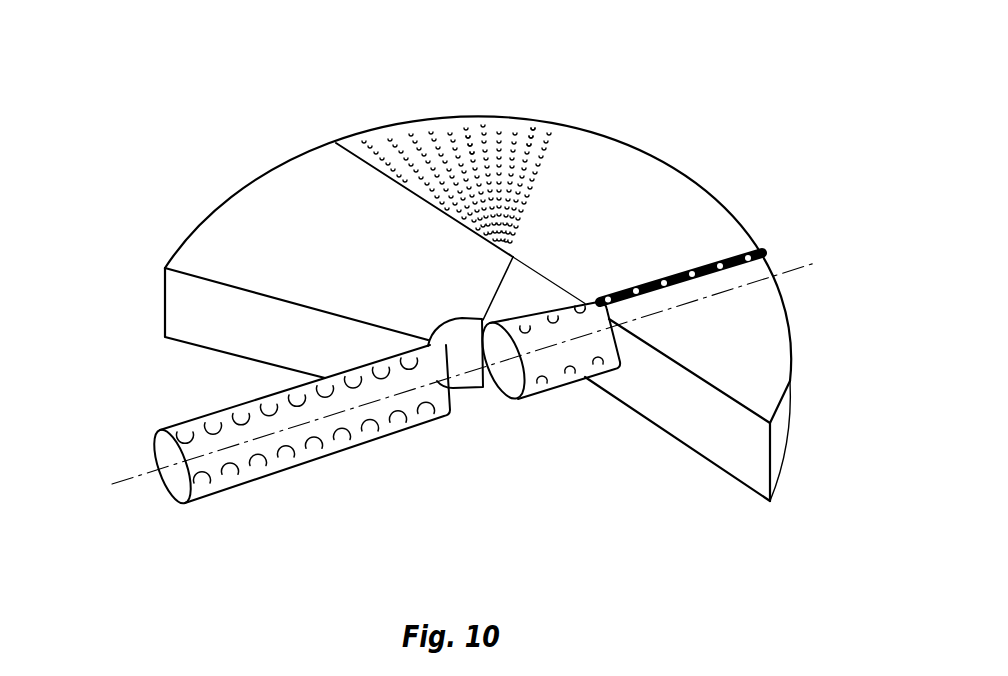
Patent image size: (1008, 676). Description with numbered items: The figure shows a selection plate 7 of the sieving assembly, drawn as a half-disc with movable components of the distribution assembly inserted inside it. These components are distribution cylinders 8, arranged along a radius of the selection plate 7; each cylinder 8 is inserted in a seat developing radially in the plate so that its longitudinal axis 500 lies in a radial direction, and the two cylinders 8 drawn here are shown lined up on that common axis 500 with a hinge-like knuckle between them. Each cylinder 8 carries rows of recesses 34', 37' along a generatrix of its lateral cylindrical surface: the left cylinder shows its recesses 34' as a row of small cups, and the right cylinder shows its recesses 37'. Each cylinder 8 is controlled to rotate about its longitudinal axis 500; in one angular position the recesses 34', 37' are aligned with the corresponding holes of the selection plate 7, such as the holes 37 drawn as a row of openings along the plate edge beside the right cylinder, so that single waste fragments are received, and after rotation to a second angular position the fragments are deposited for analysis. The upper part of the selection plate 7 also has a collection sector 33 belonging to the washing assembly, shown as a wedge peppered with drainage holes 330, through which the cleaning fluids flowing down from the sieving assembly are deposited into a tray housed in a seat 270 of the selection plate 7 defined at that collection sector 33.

The selection plate 7 is at (158, 221).
The seat 270 is at (268, 213).
The collection sector 33 is at (429, 152).
The holes 330 is at (531, 127).
The holes 37 is at (731, 314).
The recesses 37' is at (554, 272).
The distribution cylinders 8 is at (310, 463).
The recesses 34' is at (294, 397).
The longitudinal axis 500 is at (127, 493).